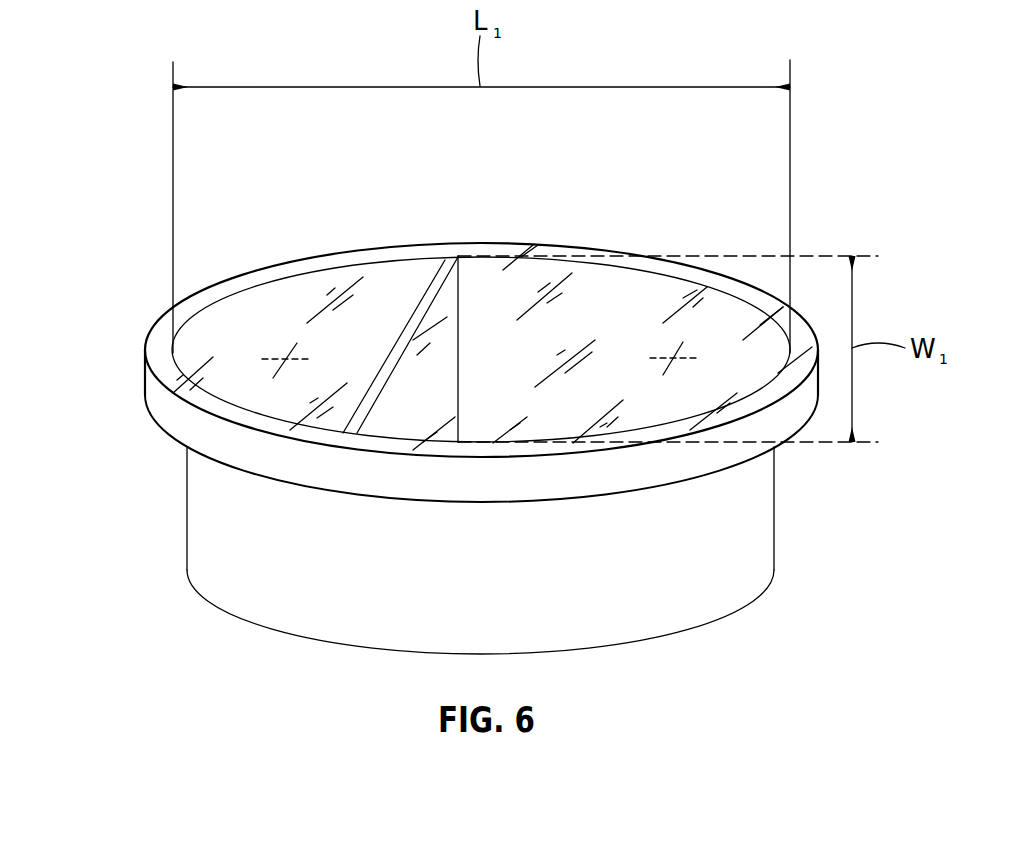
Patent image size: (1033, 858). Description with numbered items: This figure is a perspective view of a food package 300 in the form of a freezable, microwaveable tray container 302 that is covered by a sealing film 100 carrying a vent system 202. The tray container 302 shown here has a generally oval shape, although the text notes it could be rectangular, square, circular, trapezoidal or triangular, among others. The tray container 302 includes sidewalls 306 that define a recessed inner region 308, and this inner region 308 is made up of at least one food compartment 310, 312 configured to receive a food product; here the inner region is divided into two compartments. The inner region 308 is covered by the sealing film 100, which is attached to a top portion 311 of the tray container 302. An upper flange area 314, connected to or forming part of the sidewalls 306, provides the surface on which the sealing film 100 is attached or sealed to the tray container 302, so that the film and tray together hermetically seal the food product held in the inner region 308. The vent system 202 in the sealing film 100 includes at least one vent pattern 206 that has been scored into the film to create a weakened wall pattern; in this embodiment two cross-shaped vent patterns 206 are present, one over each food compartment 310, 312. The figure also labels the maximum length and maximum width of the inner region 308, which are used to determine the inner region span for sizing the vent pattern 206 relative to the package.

The food package 300 is at (148, 267).
The tray container 302 is at (292, 613).
The sidewalls 306 is at (203, 513).
The top portion 311 is at (165, 370).
The upper flange area 314 is at (167, 322).
The recessed inner region 308 is at (493, 275).
The food compartment 310 is at (233, 318).
The food compartment 312 is at (672, 288).
The sealing film 100 is at (387, 273).
The vent system 202 is at (642, 337).
The vent pattern 206 is at (272, 358).